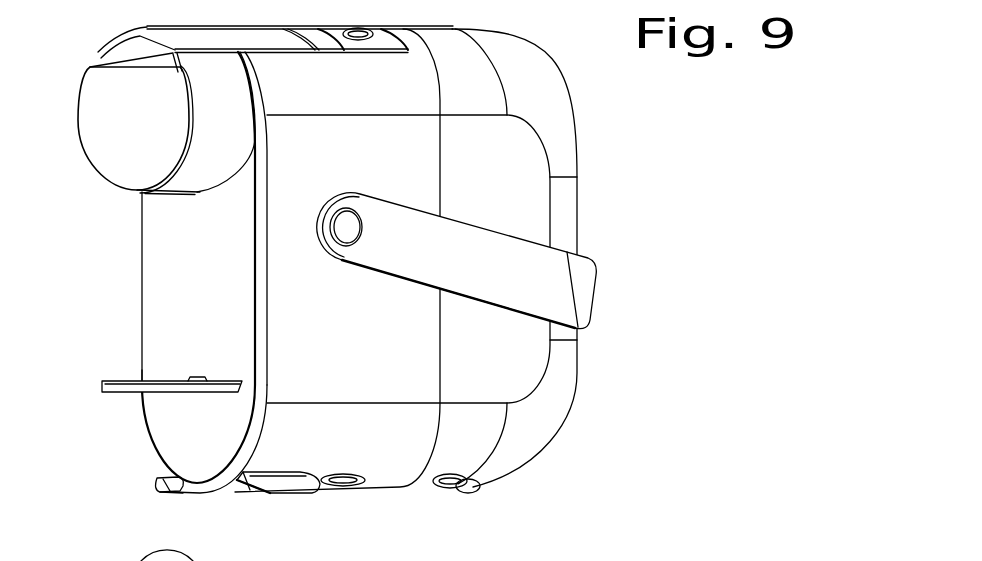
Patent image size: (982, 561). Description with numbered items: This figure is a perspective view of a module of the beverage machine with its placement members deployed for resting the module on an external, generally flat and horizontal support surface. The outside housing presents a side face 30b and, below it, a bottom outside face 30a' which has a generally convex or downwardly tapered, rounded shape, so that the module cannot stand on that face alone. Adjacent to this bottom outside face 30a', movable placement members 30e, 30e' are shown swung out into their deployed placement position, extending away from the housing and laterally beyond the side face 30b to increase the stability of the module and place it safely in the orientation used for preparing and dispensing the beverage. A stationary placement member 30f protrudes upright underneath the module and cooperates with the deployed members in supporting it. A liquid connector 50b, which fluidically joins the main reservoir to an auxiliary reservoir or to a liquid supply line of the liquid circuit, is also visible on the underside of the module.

The side face 30b is at (272, 278).
The bottom outside face 30a' is at (204, 342).
The movable placement member 30e is at (179, 491).
The foot protrusion 30e' is at (241, 511).
The liquid connector 50b is at (435, 483).
The stationary placement member 30f is at (467, 488).